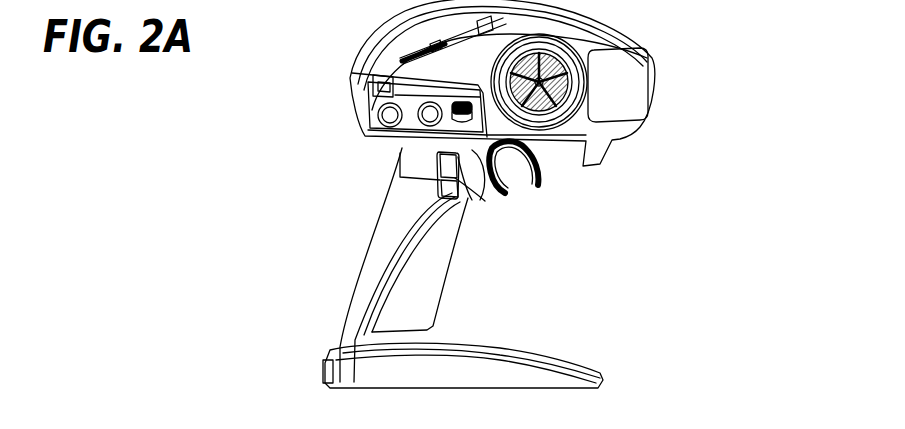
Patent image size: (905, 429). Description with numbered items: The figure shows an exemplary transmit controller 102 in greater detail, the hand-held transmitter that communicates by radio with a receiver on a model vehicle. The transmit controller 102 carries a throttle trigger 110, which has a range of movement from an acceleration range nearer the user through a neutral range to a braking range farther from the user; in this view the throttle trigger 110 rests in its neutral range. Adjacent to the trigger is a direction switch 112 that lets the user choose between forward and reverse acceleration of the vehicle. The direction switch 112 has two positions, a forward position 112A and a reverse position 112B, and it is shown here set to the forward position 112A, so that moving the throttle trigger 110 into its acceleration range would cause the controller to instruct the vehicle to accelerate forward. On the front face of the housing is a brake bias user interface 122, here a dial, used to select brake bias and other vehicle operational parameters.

The transmit controller 102 is at (697, 108).
The throttle trigger 110 is at (536, 180).
The direction switch 112 is at (442, 176).
The forward position 112A is at (447, 196).
The reverse position 112B is at (442, 160).
The brake bias user interface 122 is at (425, 102).